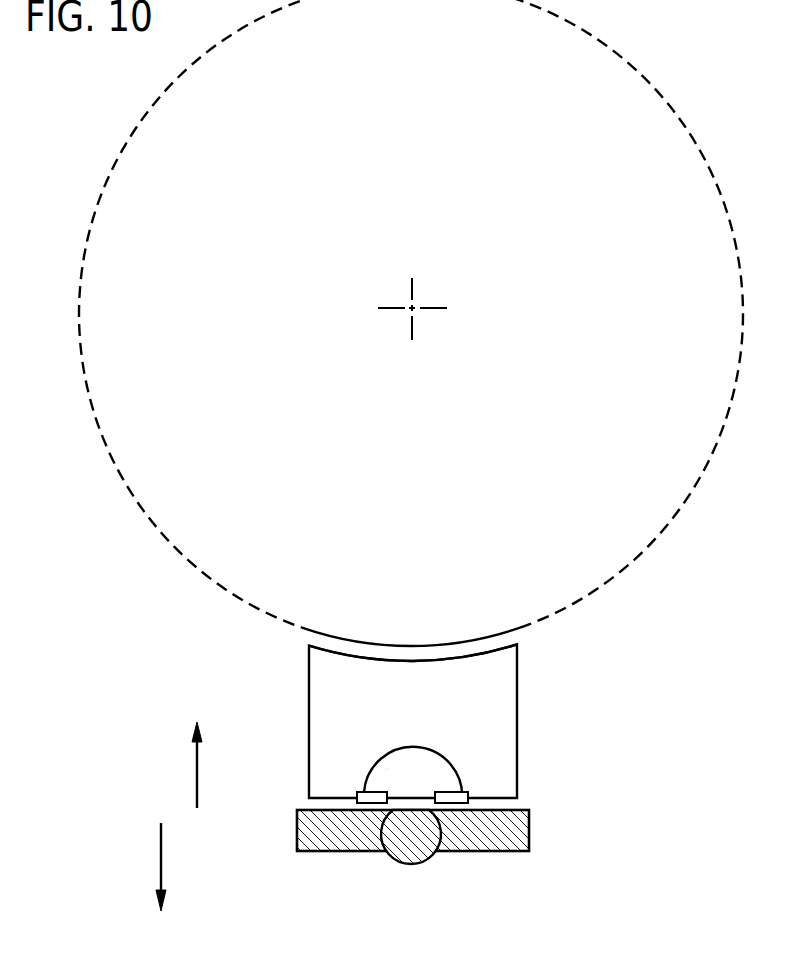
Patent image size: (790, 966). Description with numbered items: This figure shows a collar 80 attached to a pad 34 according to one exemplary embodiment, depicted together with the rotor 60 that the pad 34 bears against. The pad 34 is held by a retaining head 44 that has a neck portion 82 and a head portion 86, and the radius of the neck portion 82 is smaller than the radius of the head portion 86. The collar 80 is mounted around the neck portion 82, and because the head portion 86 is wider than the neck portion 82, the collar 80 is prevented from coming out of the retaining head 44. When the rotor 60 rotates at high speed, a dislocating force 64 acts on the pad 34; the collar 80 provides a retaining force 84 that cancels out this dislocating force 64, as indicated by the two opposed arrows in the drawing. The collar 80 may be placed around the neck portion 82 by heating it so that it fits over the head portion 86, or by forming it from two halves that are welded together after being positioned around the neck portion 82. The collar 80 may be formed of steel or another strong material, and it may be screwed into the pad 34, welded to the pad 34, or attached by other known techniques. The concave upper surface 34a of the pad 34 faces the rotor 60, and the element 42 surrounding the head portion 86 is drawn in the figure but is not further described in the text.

The rotor 60 is at (403, 585).
The pad 34 is at (495, 717).
The concave top surface 34a is at (330, 652).
The retaining head 44 is at (414, 788).
The bearing housing 42 is at (452, 762).
The collar 80 is at (370, 798).
The neck portion 82 is at (395, 803).
The head portion 86 is at (389, 769).
The dislocating force 64 is at (197, 772).
The retaining force 84 is at (160, 862).